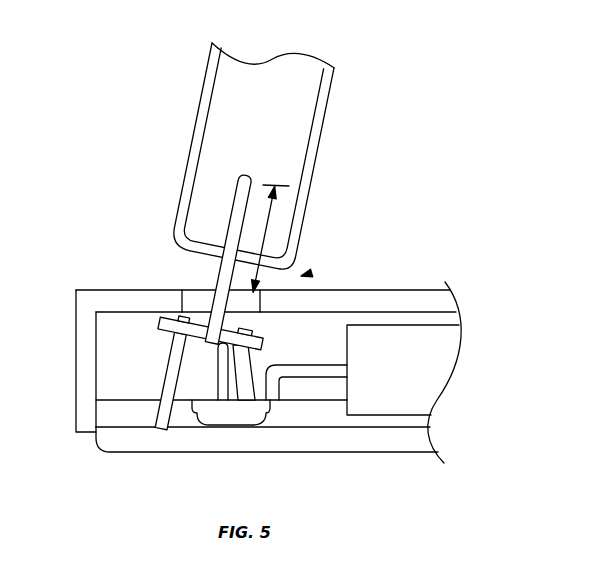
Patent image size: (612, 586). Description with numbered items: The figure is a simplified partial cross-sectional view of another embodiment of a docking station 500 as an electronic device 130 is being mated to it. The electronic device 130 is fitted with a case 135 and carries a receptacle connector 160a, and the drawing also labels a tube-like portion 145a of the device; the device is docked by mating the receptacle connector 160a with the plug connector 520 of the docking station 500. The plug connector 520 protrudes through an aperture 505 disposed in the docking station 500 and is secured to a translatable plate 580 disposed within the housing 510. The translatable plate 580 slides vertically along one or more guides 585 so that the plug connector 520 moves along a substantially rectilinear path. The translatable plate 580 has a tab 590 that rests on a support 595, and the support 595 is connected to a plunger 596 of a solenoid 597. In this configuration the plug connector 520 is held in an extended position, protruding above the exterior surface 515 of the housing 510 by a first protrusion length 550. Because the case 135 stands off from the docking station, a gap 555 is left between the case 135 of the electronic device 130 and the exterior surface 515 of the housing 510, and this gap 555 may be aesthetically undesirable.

The electronic device 130 is at (225, 87).
The tube inner wall 145a is at (200, 138).
The case 135 is at (188, 170).
The receptacle connector 160a is at (232, 203).
The plug connector 520 is at (237, 222).
The first protrusion length 550 is at (270, 224).
The gap 555 is at (303, 275).
The exterior surface 515 is at (78, 290).
The aperture 505 is at (203, 300).
The docking station 500 is at (75, 373).
The housing 510 is at (76, 396).
The translatable plate 580 is at (170, 323).
The guides 585 is at (177, 353).
The tab 590 is at (250, 331).
The support 595 is at (223, 363).
The plunger 596 is at (327, 372).
The solenoid 597 is at (422, 383).